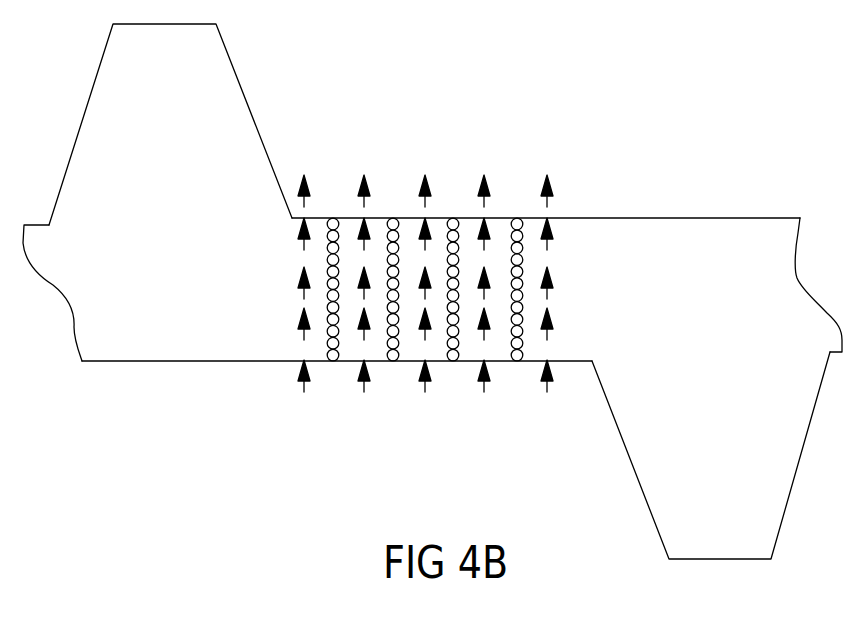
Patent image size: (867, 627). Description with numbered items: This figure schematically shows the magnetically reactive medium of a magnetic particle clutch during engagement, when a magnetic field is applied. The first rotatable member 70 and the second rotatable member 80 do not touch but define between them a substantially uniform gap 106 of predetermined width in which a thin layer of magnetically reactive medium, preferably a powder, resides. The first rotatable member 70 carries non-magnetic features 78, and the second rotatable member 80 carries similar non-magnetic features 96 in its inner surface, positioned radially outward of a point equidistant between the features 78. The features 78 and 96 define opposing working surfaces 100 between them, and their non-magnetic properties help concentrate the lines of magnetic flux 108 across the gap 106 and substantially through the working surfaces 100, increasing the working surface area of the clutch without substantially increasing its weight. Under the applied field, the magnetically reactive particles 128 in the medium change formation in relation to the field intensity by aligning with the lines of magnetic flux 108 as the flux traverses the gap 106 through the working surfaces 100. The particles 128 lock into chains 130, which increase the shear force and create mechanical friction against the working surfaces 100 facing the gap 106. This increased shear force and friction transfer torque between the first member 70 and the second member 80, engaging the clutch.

The non-magnetic features 96 is at (252, 113).
The second rotatable member 80 is at (408, 133).
The working surfaces 100 is at (578, 220).
The gap 106 is at (747, 237).
The non-magnetic features 78 is at (632, 473).
The first rotatable member 70 is at (520, 462).
The lines of magnetic flux 108 is at (366, 392).
The magnetically reactive particles 128 is at (338, 282).
The chains 130 is at (452, 218).